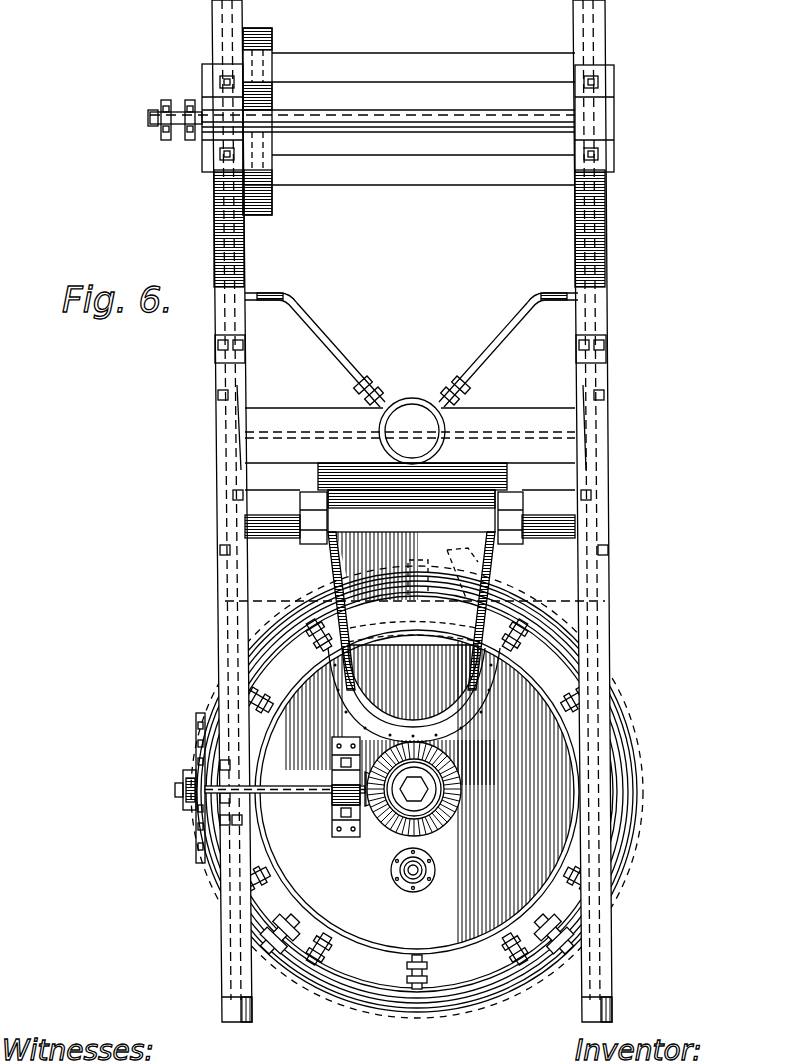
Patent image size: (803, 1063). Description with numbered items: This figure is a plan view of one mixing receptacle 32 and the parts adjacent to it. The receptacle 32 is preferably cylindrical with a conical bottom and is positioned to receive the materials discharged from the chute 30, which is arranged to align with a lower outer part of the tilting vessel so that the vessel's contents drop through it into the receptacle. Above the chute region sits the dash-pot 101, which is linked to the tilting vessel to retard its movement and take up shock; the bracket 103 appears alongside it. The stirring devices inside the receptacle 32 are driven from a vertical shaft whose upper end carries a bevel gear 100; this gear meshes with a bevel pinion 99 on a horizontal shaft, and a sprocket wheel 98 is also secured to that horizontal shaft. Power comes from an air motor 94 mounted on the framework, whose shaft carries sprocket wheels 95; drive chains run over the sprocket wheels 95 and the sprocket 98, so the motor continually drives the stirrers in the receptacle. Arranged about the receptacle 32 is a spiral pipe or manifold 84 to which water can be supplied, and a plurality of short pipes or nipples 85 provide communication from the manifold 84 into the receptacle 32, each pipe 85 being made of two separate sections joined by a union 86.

The chute 30 is at (414, 616).
The mixing receptacle 32 is at (420, 795).
The spiral pipe or manifold 84 is at (414, 1010).
The short pipe or nipple 85 is at (428, 961).
The union 86 is at (410, 968).
The air motor 94 is at (253, 90).
The sprocket wheel 95 is at (190, 100).
The sprocket wheel 98 is at (196, 845).
The bevel pinion 99 is at (368, 836).
The bevel gear 100 is at (456, 795).
The dash-pot 101 is at (412, 431).
The V-shaped bracket 103 is at (343, 352).